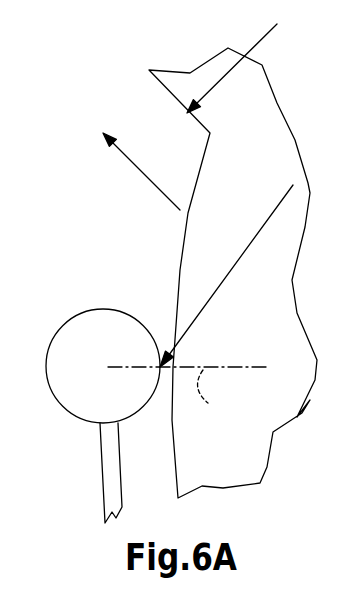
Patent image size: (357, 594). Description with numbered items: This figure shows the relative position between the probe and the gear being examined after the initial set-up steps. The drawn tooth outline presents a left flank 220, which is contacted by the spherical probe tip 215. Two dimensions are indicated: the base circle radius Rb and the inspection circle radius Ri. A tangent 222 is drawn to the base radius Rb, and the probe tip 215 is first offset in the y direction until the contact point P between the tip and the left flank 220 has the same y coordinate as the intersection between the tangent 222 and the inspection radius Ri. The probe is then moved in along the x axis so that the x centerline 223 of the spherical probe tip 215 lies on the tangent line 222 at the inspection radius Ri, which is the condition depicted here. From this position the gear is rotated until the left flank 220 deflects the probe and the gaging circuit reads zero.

The left flank 220 is at (181, 258).
The spherical probe tip 215 is at (63, 385).
The x centerline 223 is at (140, 367).
The tangent 222 is at (188, 395).
The contact point P is at (164, 366).
The inspection circle radius Ri is at (268, 219).
The base circle radius Rb is at (258, 42).